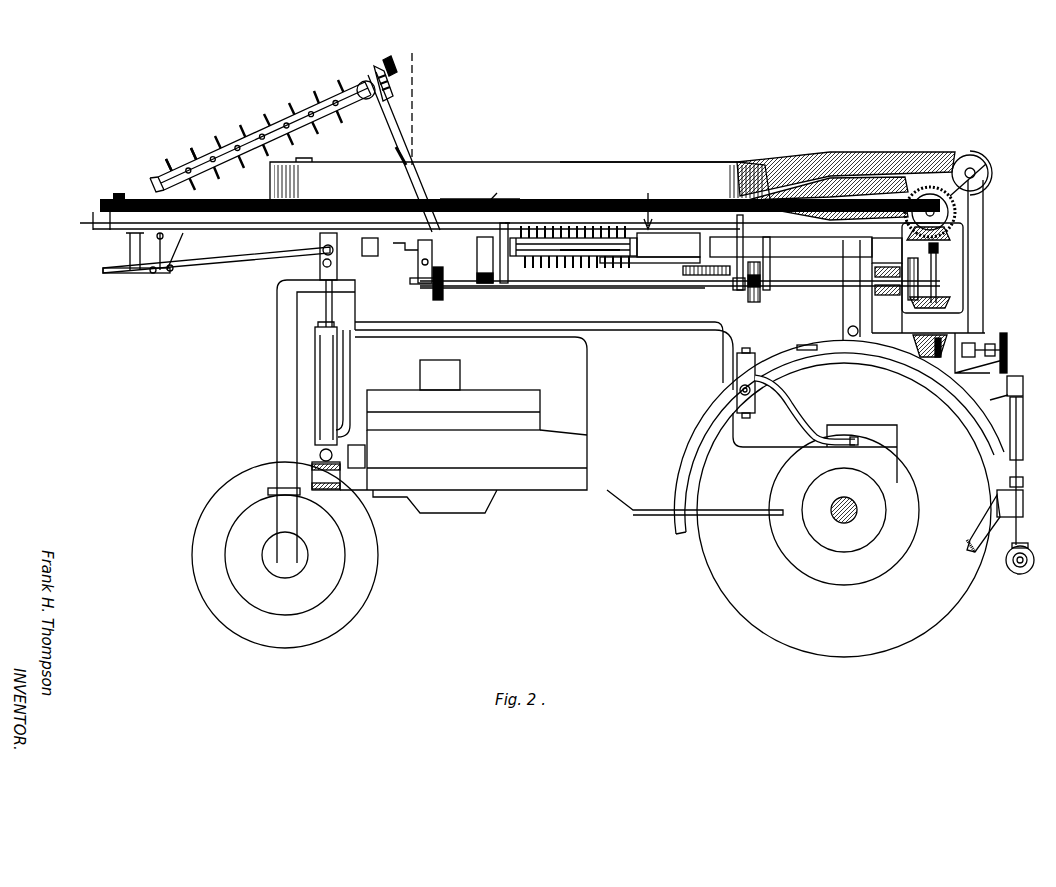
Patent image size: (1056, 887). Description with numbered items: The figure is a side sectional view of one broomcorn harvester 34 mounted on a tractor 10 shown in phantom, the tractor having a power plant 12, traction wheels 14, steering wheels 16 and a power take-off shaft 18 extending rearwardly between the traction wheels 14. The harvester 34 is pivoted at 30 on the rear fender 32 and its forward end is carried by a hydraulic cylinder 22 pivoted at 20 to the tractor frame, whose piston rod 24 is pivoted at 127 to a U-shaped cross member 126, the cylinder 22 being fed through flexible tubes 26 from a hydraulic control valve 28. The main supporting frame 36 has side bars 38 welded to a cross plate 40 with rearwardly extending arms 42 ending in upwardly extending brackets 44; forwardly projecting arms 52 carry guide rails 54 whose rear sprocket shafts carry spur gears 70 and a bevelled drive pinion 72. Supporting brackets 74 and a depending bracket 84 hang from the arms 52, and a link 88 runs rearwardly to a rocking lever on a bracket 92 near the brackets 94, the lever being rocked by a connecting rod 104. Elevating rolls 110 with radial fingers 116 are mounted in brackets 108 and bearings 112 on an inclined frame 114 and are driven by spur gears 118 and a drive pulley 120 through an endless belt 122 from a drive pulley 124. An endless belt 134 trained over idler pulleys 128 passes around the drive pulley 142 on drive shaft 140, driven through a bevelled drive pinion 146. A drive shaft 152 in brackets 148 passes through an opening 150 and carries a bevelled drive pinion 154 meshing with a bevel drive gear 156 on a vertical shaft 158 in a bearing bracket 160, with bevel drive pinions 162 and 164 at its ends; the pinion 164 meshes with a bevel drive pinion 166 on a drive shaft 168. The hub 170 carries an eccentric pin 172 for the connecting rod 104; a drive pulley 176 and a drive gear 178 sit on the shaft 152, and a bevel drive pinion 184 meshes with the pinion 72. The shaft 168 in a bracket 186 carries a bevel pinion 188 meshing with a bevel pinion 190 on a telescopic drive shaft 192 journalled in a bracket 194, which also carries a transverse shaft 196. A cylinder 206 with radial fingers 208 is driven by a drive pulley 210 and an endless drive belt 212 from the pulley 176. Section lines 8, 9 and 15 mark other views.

The tractor 10 is at (262, 406).
The power plant 12 is at (510, 397).
The traction wheels 14 is at (723, 550).
The steering wheels 16 is at (337, 593).
The pivot 20 is at (337, 461).
The hydraulic cylinders 22 is at (328, 402).
The piston rods 24 is at (324, 311).
The flexible tubes 26 is at (603, 331).
The hydraulic control valves 28 is at (752, 374).
The pivot 30 is at (853, 337).
The rear fenders 32 is at (737, 393).
The harvester 34 is at (564, 153).
The main supporting frame 36 is at (671, 270).
The side bars 38 is at (790, 247).
The cross plate 40 is at (883, 248).
The rearwardly extending arms 42 is at (903, 323).
The upwardly extending brackets 44 is at (977, 272).
The forwardly projecting arms 52 is at (673, 232).
The guide rails 54 is at (476, 197).
The spur gears 70 is at (673, 262).
The bevelled drive pinion 72 is at (684, 276).
The supporting brackets 74 is at (118, 274).
The depending bracket 84 is at (170, 272).
The link 88 is at (242, 272).
The bracket 92 is at (400, 240).
The brackets 94 is at (360, 237).
The connecting rod 104 is at (420, 276).
The brackets 108 is at (150, 180).
The elevating rolls 110 is at (262, 133).
The bearings 112 is at (357, 84).
The inclined frame 114 is at (385, 120).
The radial fingers 116 is at (185, 153).
The spur gears 118 is at (386, 64).
The drive pulley 120 is at (375, 82).
The endless belt 122 is at (404, 146).
The drive pulley 124 is at (434, 295).
The U-shaped cross member 126 is at (313, 268).
The pivot 127 is at (328, 293).
The idler pulleys 128 is at (307, 158).
The endless belt 134 is at (577, 175).
The drive shaft 140 is at (984, 178).
The drive pulley 142 is at (987, 163).
The bevelled drive pinion 146 is at (925, 190).
The brackets 148 is at (737, 250).
The opening 150 is at (880, 283).
The drive shaft 152 is at (590, 287).
The bevelled drive pinion 154 is at (918, 265).
The bevel drive gear 156 is at (947, 301).
The vertical shaft 158 is at (937, 283).
The bearing bracket 160 is at (938, 230).
The bevel drive pinion 162 is at (937, 246).
The bevel drive pinion 164 is at (930, 345).
The bevel drive pinion 166 is at (942, 353).
The drive shaft 168 is at (983, 337).
The hub 170 is at (422, 265).
The eccentric pin 172 is at (418, 281).
The drive pulley 176 is at (472, 285).
The drive gear 178 is at (752, 303).
The bevel drive pinion 184 is at (723, 291).
The bracket 186 is at (1002, 397).
The bevel pinion 188 is at (1005, 347).
The bevel pinion 190 is at (1012, 374).
The telescopic drive shaft 192 is at (1000, 425).
The bracket 194 is at (997, 493).
The transverse shaft 196 is at (1020, 568).
The cylinder 206 is at (568, 233).
The radial fingers 208 is at (588, 237).
The drive pulley 210 is at (459, 233).
The endless drive belt 212 is at (487, 260).
The section 15 is at (569, 203).
The section line 8 is at (93, 213).
The section line 9 is at (310, 213).
The power take-off shaft 18 is at (397, 62).